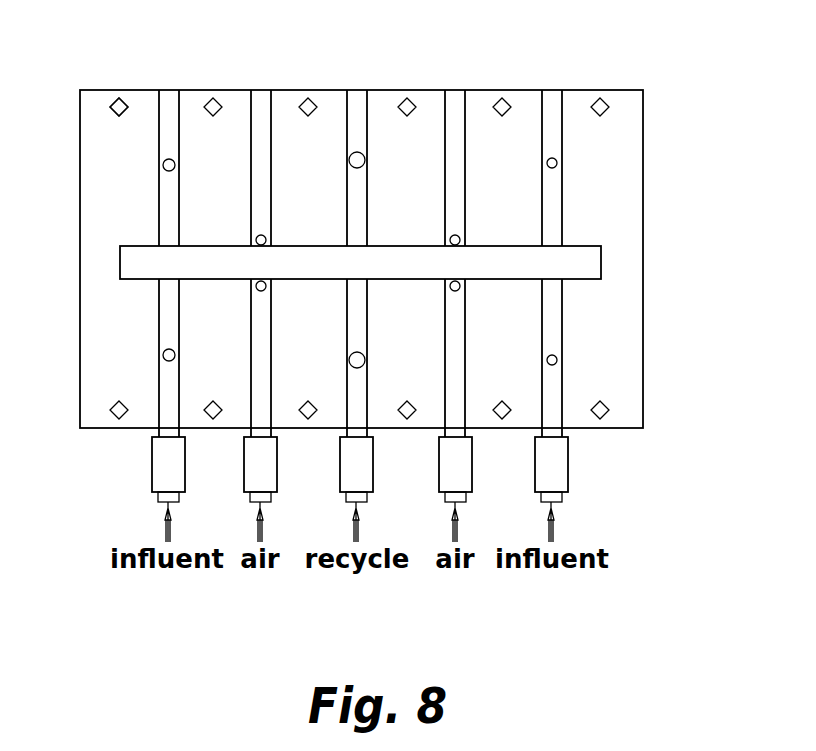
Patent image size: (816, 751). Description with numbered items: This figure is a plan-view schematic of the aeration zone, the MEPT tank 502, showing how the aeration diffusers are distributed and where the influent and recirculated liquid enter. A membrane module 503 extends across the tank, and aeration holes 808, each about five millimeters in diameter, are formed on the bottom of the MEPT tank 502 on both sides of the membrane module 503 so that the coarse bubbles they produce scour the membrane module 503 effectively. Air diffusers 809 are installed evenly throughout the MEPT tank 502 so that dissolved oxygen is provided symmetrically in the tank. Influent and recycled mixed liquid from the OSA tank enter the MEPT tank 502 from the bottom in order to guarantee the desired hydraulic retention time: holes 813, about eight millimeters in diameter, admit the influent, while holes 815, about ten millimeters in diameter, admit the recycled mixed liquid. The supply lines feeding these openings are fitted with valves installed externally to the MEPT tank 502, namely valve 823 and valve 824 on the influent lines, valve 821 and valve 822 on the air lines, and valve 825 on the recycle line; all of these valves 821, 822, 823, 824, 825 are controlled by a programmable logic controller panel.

The MEPT tank 502 is at (633, 103).
The membrane module 503 is at (582, 263).
The air diffusers 809 is at (117, 105).
The holes for influent 813 is at (169, 159).
The aeration holes 808 is at (261, 235).
The holes for recycled mixed liquid 815 is at (357, 152).
The valve 823 is at (162, 469).
The valve 821 is at (257, 467).
The valve 825 is at (355, 467).
The valve 822 is at (455, 467).
The valve 824 is at (552, 473).